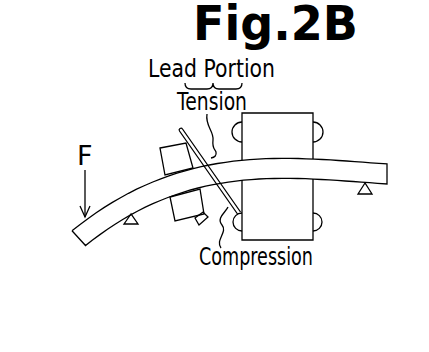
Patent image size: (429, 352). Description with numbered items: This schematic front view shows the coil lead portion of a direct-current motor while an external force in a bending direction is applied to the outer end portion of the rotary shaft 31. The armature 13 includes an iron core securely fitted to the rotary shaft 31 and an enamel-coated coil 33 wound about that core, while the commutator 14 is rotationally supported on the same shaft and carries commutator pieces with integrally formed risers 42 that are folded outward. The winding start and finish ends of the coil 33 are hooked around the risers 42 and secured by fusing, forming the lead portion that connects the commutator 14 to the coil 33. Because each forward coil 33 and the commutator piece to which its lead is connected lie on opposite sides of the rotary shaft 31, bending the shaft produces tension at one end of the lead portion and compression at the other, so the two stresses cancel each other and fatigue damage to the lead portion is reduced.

The armature 13 is at (383, 112).
The commutator 14 is at (175, 233).
The rotary shaft 31 is at (100, 236).
The coil 33 is at (323, 223).
The riser 42 is at (181, 129).